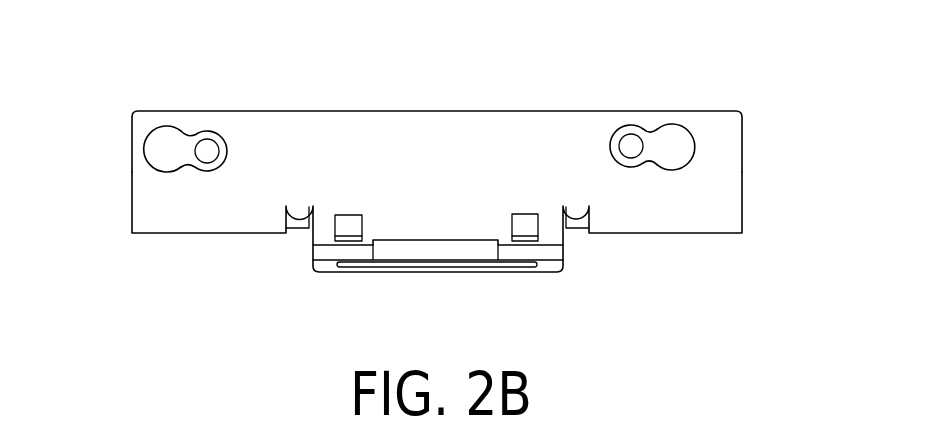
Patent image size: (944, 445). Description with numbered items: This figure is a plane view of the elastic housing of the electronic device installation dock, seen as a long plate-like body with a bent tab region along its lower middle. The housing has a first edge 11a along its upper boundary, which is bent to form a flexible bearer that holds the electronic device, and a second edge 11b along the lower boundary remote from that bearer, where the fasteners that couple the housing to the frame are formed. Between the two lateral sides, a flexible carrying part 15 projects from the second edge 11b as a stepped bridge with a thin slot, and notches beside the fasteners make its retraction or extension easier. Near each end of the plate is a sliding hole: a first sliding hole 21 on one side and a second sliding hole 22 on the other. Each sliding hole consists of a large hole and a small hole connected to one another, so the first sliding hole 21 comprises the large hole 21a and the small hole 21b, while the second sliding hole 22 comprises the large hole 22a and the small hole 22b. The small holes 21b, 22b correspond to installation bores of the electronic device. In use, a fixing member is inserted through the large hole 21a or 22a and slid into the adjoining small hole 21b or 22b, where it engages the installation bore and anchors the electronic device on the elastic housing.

The first edge 11a is at (731, 109).
The second edge 11b is at (738, 234).
The flexible carrying part 15 is at (562, 272).
The sliding hole 21 is at (147, 191).
The large hole 21a is at (166, 165).
The small hole 21b is at (207, 155).
The sliding hole 22 is at (711, 173).
The large hole 22a is at (687, 145).
The small hole 22b is at (632, 155).